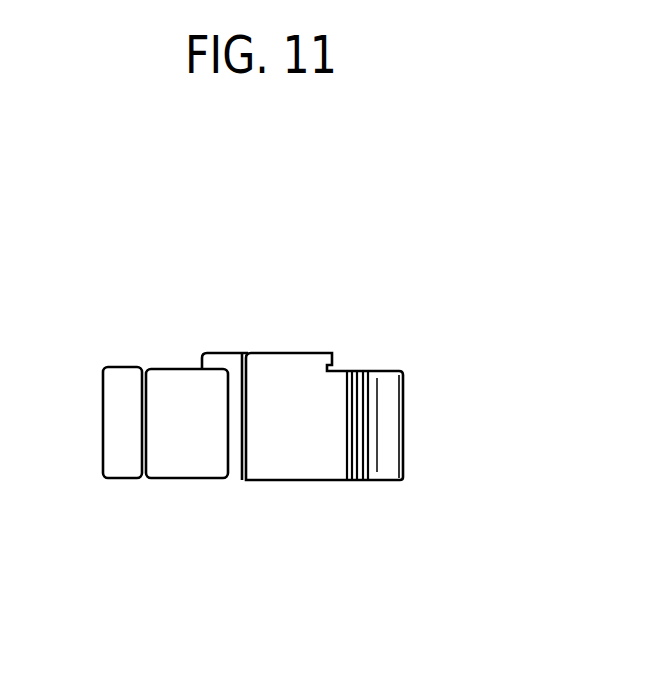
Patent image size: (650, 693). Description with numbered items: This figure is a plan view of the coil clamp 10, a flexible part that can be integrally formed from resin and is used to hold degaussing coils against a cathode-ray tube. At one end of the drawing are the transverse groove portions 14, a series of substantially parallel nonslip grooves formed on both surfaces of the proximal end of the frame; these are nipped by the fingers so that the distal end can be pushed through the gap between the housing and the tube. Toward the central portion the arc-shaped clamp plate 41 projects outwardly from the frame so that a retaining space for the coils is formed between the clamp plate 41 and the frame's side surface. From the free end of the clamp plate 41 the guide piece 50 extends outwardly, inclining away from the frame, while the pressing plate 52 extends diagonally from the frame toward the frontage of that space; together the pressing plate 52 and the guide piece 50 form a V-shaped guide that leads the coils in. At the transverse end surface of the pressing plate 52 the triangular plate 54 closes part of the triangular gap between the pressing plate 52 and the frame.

The coil clamp 10 is at (412, 377).
The transverse groove portions 14 is at (350, 480).
The clamp plate 41 is at (237, 467).
The guide piece 50 is at (167, 461).
The pressing plate 52 is at (297, 458).
The triangular plate 54 is at (305, 362).